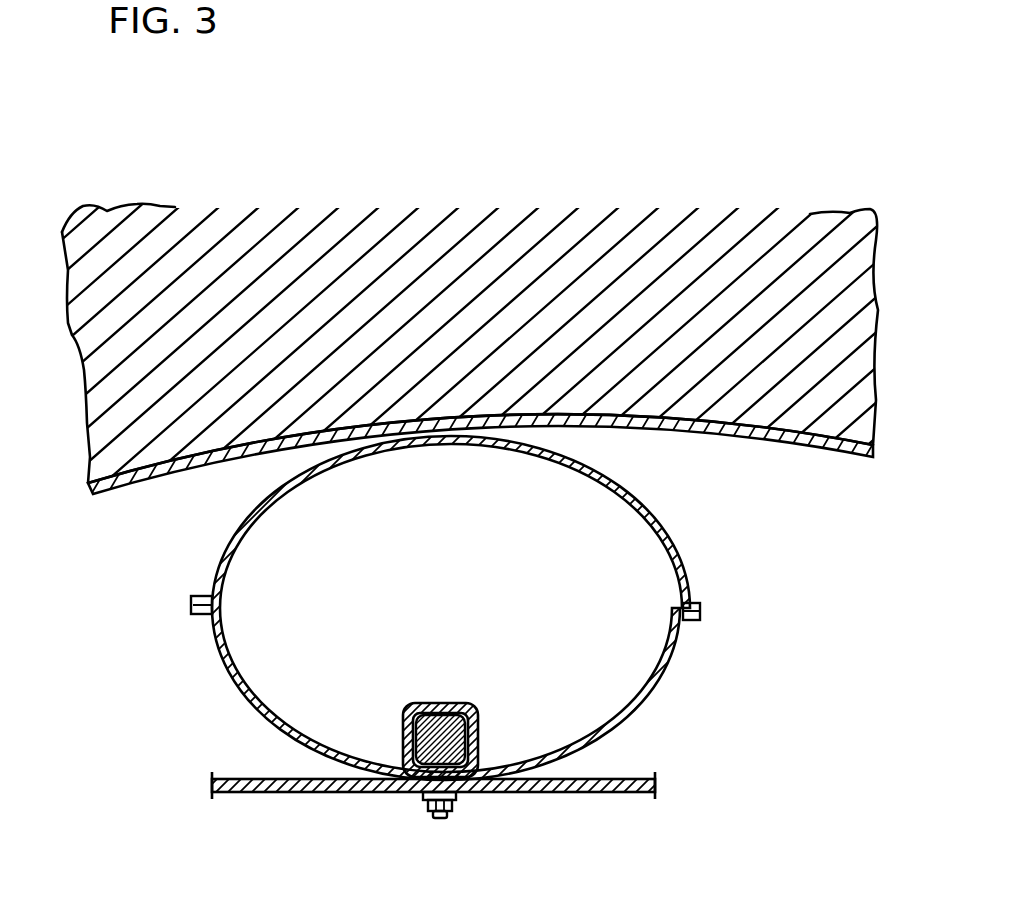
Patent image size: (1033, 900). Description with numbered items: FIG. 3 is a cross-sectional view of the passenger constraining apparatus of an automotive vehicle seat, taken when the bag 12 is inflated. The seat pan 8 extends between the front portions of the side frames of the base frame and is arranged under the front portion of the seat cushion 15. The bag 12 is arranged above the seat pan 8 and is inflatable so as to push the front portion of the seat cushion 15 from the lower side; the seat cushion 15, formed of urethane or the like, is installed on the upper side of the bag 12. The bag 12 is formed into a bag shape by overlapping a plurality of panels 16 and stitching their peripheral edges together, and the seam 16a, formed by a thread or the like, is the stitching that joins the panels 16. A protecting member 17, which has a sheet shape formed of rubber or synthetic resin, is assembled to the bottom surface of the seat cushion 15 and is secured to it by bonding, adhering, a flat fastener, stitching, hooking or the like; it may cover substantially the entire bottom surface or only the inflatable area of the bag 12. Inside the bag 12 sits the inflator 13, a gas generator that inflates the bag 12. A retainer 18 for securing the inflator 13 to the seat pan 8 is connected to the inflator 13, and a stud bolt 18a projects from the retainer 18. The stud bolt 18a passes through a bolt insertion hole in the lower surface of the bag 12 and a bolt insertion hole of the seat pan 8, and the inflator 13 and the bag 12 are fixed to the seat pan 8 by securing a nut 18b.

The seat cushion 15 is at (84, 343).
The protecting member 17 is at (130, 485).
The panels 16 is at (612, 480).
The seam 16a is at (208, 602).
The bag 12 is at (446, 608).
The inflator 13 is at (410, 716).
The retainer 18 is at (470, 704).
The stud bolt 18a is at (440, 819).
The nut 18b is at (456, 800).
The seat pan 8 is at (636, 793).